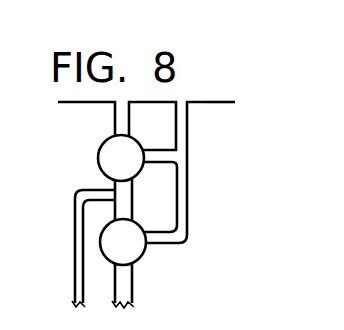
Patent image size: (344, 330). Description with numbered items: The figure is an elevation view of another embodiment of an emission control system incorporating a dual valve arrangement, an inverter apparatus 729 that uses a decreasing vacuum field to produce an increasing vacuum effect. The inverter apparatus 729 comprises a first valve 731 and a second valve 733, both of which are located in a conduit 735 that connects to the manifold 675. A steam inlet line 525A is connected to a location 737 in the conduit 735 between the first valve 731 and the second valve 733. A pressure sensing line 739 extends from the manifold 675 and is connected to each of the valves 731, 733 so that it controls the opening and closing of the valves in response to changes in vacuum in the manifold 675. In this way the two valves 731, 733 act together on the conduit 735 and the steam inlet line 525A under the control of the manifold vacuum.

The conduit 735 is at (113, 118).
The first valve 731 is at (97, 157).
The location in the line between the valves 737 is at (118, 201).
The manifold 675 is at (185, 96).
The inverter apparatus 729 is at (224, 96).
The pressure sensing line 739 is at (190, 142).
The second valve 733 is at (147, 262).
The steam inlet line 525A is at (75, 273).